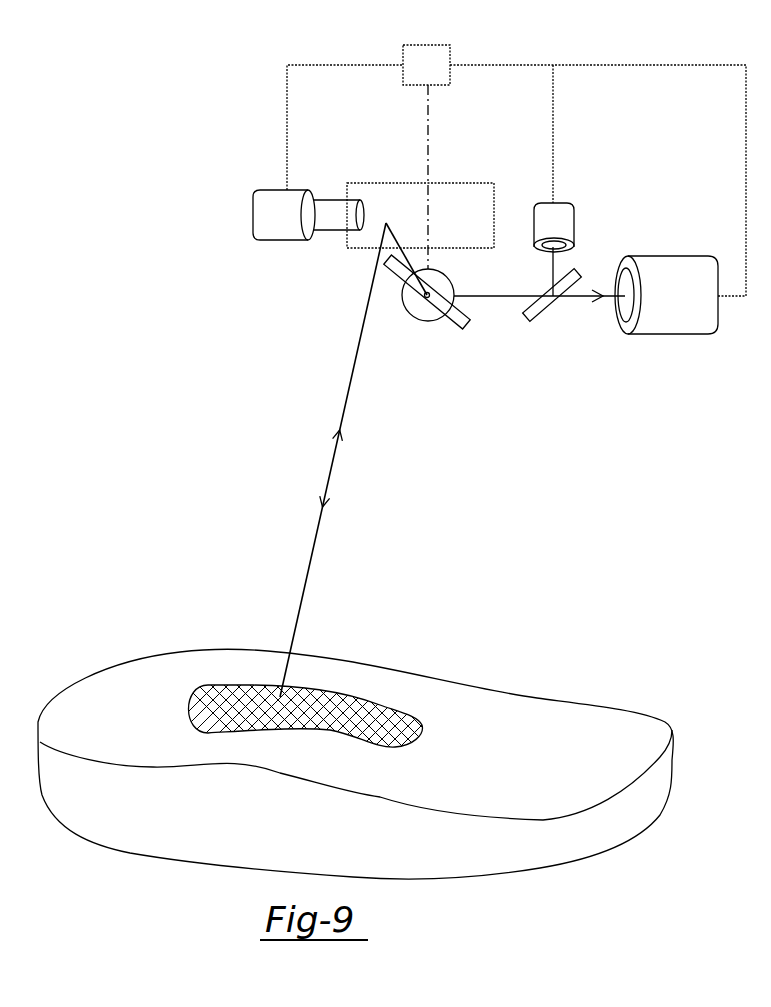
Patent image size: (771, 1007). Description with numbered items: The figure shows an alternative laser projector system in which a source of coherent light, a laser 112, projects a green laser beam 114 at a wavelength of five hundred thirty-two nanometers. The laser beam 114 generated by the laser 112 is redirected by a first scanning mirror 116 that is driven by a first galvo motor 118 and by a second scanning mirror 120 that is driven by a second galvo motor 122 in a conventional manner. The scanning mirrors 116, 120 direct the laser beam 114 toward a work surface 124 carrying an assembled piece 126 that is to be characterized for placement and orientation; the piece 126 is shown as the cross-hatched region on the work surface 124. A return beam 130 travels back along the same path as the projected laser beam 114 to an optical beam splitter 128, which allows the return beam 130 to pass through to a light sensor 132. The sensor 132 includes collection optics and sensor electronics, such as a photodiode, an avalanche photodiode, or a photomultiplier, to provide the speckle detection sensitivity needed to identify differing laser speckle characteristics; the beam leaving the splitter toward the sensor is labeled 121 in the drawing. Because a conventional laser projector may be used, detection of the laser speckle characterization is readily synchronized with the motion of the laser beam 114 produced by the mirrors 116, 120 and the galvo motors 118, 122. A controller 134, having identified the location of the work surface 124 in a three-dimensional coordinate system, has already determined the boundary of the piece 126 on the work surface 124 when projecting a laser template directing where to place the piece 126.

The laser 112 is at (568, 206).
The laser beam 114 is at (326, 508).
The first scanning mirror 116 is at (465, 330).
The first galvo motor 118 is at (403, 308).
The second scanning mirror 120 is at (478, 186).
The reflected beam 121 is at (600, 292).
The second galvo motor 122 is at (275, 192).
The work surface 124 is at (515, 728).
The assembled piece 126 is at (222, 698).
The optical beam splitter 128 is at (536, 318).
The return beam 130 is at (337, 430).
The light sensor 132 is at (695, 262).
The controller 134 is at (442, 81).